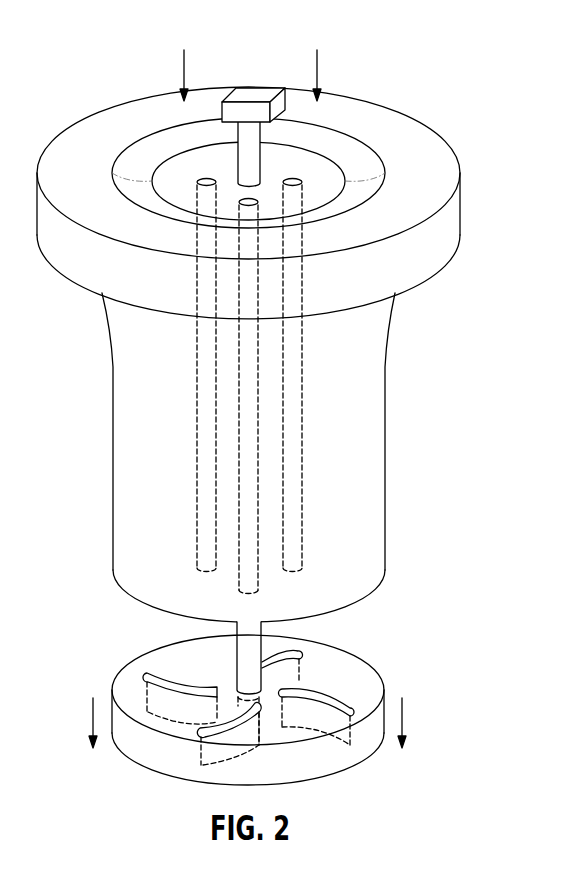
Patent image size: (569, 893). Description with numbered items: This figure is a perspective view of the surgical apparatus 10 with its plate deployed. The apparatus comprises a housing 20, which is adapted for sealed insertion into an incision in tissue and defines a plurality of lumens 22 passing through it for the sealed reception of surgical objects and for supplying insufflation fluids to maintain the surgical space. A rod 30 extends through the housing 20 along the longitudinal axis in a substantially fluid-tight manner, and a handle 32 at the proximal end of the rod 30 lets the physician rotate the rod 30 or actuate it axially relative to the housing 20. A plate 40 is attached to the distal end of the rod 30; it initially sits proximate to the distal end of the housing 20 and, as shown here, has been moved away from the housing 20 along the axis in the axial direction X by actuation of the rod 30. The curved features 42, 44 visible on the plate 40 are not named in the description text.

The surgical apparatus 10 is at (458, 100).
The housing 20 is at (410, 351).
The lumens 22 is at (204, 177).
The rod 30 is at (262, 152).
The handle 32 is at (257, 90).
The plate 40 is at (388, 700).
The vane 42 is at (328, 684).
The vane 44 is at (156, 668).